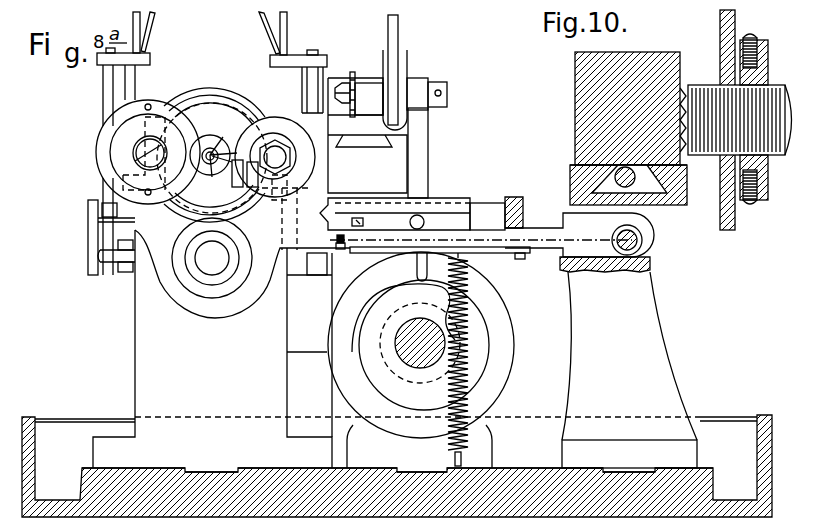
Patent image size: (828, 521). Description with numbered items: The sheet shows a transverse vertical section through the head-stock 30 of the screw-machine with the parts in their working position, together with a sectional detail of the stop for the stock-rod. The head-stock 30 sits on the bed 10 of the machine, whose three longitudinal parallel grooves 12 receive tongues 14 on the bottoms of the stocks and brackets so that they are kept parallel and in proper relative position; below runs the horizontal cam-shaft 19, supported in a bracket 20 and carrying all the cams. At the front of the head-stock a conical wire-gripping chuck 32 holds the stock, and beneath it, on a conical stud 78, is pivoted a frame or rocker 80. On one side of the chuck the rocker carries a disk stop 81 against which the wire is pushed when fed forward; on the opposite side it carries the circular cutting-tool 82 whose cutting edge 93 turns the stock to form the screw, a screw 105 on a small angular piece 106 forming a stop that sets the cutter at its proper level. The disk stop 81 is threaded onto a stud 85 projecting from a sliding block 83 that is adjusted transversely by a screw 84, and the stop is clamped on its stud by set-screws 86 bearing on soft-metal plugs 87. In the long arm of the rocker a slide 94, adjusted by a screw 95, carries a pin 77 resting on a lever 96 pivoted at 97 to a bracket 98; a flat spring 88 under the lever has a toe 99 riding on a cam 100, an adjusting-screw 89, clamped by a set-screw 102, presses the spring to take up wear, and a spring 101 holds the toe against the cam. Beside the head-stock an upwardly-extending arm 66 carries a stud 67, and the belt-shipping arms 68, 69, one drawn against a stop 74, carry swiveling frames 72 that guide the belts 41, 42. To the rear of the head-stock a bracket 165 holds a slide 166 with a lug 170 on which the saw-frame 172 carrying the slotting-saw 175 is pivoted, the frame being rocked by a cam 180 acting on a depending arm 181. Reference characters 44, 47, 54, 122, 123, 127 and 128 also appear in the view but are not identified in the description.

In FIG. 8A, the bed 10 is at (397, 466).
In FIG. 8A, the longitudinal parallel grooves 12 is at (232, 470).
In FIG. 8A, the tongues 14 is at (205, 466).
In FIG. 8A, the cam-shaft 19 is at (420, 343).
In FIG. 8A, the bracket 20 is at (446, 359).
In FIG. 8A, the head-stock 30 is at (292, 328).
In FIG. 8A, the wire-gripping chuck 32 is at (214, 148).
In FIG. 8A, the belt 41 is at (140, 80).
In FIG. 8A, the belt 42 is at (153, 22).
In FIG. 8A, the gear 44 is at (222, 92).
In FIG. 8A, the block 47 is at (300, 345).
In FIG. 8A, the hidden gear 54 is at (183, 200).
In FIG. 8A, the upwardly-extending arm 66 is at (88, 232).
In FIG. 8A, the stud 67 is at (108, 205).
In FIG. 8A, the belt-shipping arm 68 is at (316, 78).
In FIG. 8A, the belt-shipping arm 69 is at (103, 99).
In FIG. 8A, the swiveling frame 72 is at (150, 58).
In FIG. 8A, the stop 74 is at (118, 263).
In FIG. 8A, the pin 77 is at (421, 216).
In FIG. 8A, the conical stud 78 is at (212, 258).
In FIG. 8A, the rocker 80 is at (464, 198).
In FIG. 10, the rocker 80 is at (678, 186).
In FIG. 8A, the disk stop 81 is at (98, 148).
In FIG. 10, the disk stop 81 is at (736, 225).
In FIG. 8A, the cutting-tool 82 is at (262, 137).
In FIG. 10, the sliding block 83 is at (658, 62).
In FIG. 10, the screw 84 is at (650, 208).
In FIG. 8A, the threaded stud 85 is at (140, 153).
In FIG. 10, the threaded stud 85 is at (766, 88).
In FIG. 8A, the set-screws 86 is at (148, 106).
In FIG. 10, the set-screws 86 is at (752, 38).
In FIG. 10, the soft-metal plugs 87 is at (762, 64).
In FIG. 8A, the flat spring 88 is at (490, 253).
In FIG. 8A, the adjusting-screw 89 is at (363, 222).
In FIG. 8A, the cutting edge 93 is at (216, 150).
In FIG. 8A, the slide 94 is at (492, 204).
In FIG. 8A, the screw 95 is at (523, 212).
In FIG. 8A, the lever 96 is at (535, 242).
In FIG. 8A, the pivot 97 is at (638, 246).
In FIG. 8A, the bracket 98 is at (628, 362).
In FIG. 8A, the toe 99 is at (417, 276).
In FIG. 8A, the cam 100 is at (403, 318).
In FIG. 8A, the spring 101 is at (506, 318).
In FIG. 8A, the set-screw 102 is at (344, 252).
In FIG. 8A, the screw 105 is at (227, 182).
In FIG. 8A, the angular piece 106 is at (260, 183).
In FIG. 8A, the shaft 122 is at (413, 82).
In FIG. 8A, the shaft end 123 is at (448, 88).
In FIG. 8A, the pulley 127 is at (406, 60).
In FIG. 8A, the rod 128 is at (399, 28).
In FIG. 8A, the bracket 165 is at (367, 135).
In FIG. 8A, the slide 166 is at (364, 141).
In FIG. 8A, the lug 170 is at (339, 101).
In FIG. 8A, the saw-frame 172 is at (369, 88).
In FIG. 8A, the slotting-saw 175 is at (348, 72).
In FIG. 8A, the cam 180 is at (512, 352).
In FIG. 8A, the arm 181 is at (428, 126).